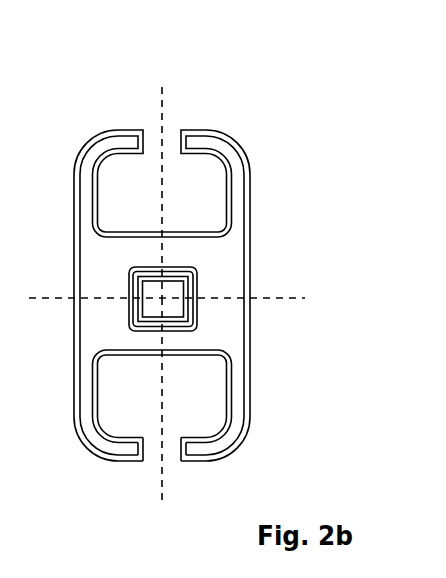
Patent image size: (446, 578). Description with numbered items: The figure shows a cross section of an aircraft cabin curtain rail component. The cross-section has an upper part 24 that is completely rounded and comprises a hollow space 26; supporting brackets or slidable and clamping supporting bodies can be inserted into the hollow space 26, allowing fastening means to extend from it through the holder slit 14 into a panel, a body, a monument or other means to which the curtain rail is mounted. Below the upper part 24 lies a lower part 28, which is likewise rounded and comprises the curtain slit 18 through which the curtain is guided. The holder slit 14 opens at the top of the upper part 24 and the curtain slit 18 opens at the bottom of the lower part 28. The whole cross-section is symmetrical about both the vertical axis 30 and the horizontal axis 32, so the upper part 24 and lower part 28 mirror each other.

The holder slit 14 is at (178, 107).
The curtain slit 18 is at (155, 492).
The upper part 24 is at (204, 195).
The hollow space 26 is at (217, 157).
The lower part 28 is at (280, 357).
The vertical axis 30 is at (163, 484).
The horizontal axis 32 is at (280, 298).